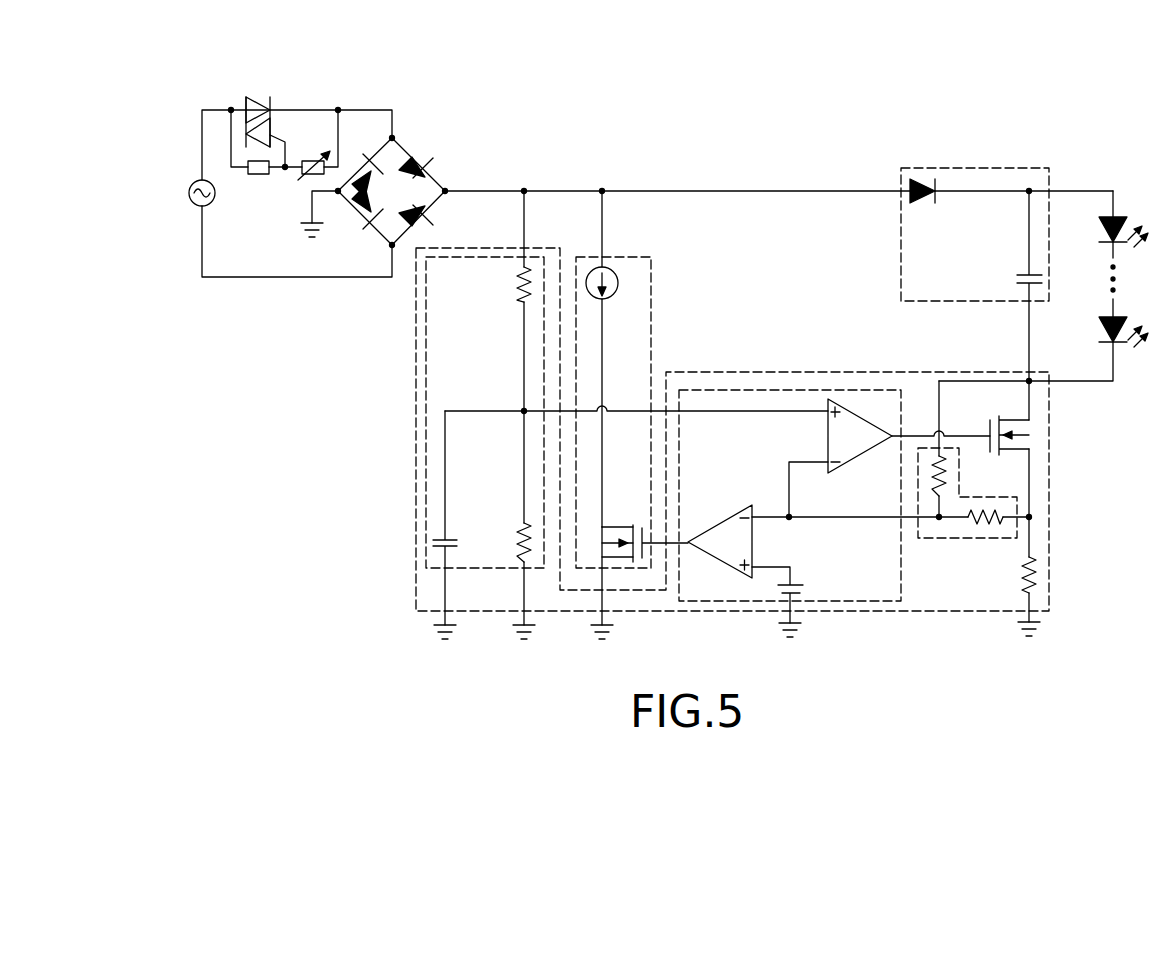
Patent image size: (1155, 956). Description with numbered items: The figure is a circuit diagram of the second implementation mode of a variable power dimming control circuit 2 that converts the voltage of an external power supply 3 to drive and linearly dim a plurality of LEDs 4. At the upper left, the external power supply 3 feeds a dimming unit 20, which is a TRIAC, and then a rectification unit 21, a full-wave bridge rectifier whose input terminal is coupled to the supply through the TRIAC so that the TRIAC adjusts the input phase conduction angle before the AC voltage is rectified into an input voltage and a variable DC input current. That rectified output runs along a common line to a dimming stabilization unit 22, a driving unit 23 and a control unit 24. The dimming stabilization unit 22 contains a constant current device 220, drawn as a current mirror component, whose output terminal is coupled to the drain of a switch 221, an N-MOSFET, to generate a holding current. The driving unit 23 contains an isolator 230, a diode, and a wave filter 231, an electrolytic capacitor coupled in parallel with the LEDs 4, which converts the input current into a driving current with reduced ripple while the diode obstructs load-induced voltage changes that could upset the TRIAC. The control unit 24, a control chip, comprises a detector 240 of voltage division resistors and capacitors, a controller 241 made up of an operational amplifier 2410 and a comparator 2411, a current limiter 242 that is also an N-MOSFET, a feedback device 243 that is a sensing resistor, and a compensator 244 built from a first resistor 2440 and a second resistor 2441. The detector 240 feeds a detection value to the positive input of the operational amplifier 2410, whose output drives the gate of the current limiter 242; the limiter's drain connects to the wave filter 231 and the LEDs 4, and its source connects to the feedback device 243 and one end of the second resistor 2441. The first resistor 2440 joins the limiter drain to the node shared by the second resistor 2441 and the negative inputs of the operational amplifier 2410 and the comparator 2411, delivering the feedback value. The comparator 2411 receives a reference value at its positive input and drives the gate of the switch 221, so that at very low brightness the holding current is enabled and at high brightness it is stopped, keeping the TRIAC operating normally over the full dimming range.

The variable power dimming control circuit 2 is at (230, 74).
The external power supply 3 is at (198, 180).
The dimming unit 20 is at (270, 102).
The rectification unit 21 is at (400, 143).
The dimming stabilization unit 22 is at (653, 273).
The constant current device 220 is at (613, 277).
The switch 221 is at (620, 560).
The driving unit 23 is at (1052, 177).
The isolator 230 is at (937, 182).
The wave filter 231 is at (1023, 275).
The control unit 24 is at (723, 372).
The detector 240 is at (544, 273).
The controller 241 is at (806, 390).
The operational amplifier 2410 is at (870, 417).
The comparator 2411 is at (725, 565).
The current limiter 242 is at (1027, 413).
The feedback device 243 is at (1037, 562).
The compensator 244 is at (1010, 487).
The first resistor 2440 is at (940, 467).
The second resistor 2441 is at (1003, 523).
The LEDs 4 is at (1123, 217).